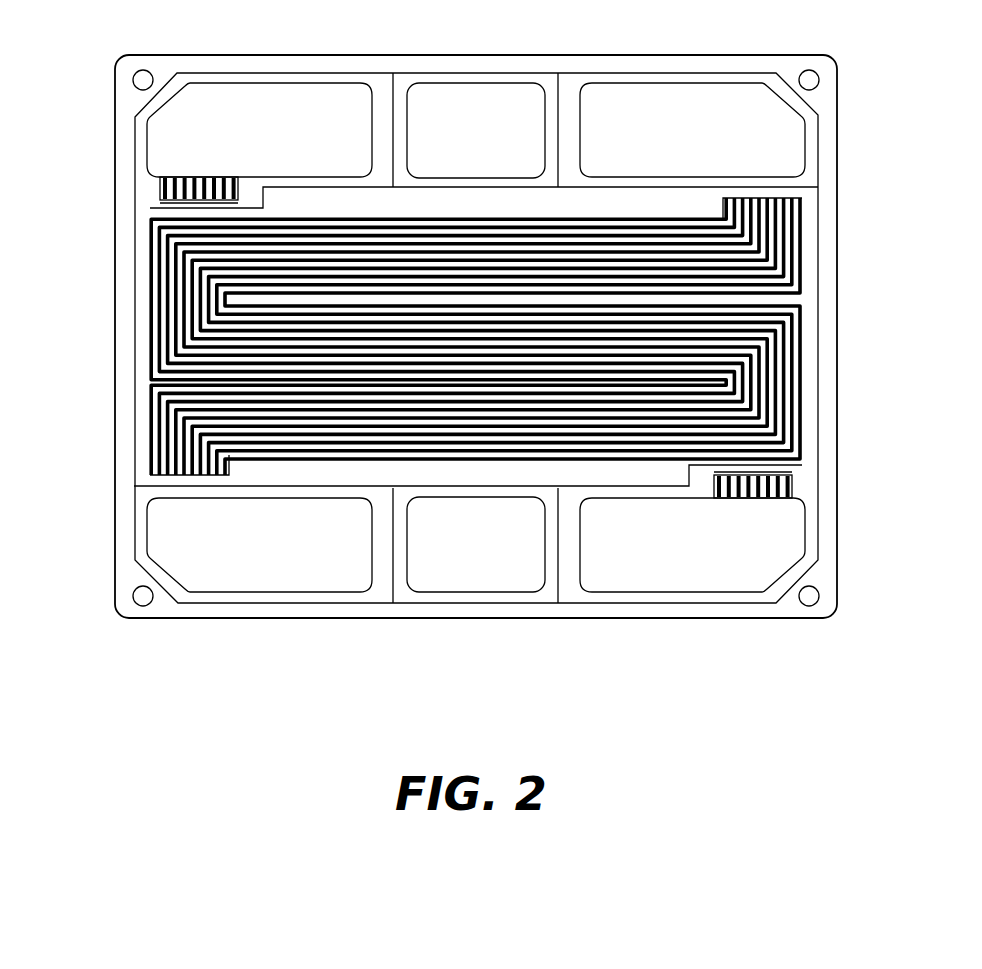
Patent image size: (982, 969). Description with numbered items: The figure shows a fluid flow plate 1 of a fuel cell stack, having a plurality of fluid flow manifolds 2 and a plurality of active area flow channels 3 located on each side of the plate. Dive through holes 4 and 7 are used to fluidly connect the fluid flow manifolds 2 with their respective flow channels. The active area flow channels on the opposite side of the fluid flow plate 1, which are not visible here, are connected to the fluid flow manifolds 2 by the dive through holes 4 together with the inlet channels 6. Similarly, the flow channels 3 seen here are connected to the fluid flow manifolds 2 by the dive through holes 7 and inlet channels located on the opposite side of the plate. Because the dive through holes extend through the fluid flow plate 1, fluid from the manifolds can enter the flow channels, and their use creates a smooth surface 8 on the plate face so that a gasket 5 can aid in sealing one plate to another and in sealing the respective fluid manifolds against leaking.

The fluid flow plate 1 is at (517, 67).
The fluid flow manifolds 2 is at (323, 97).
The active area flow channels 3 is at (810, 271).
The dive through holes 4 is at (220, 200).
The gasket 5 is at (821, 148).
The inlet channels 6 is at (160, 184).
The dive through holes 7 is at (770, 197).
The smooth surface 8 is at (220, 480).